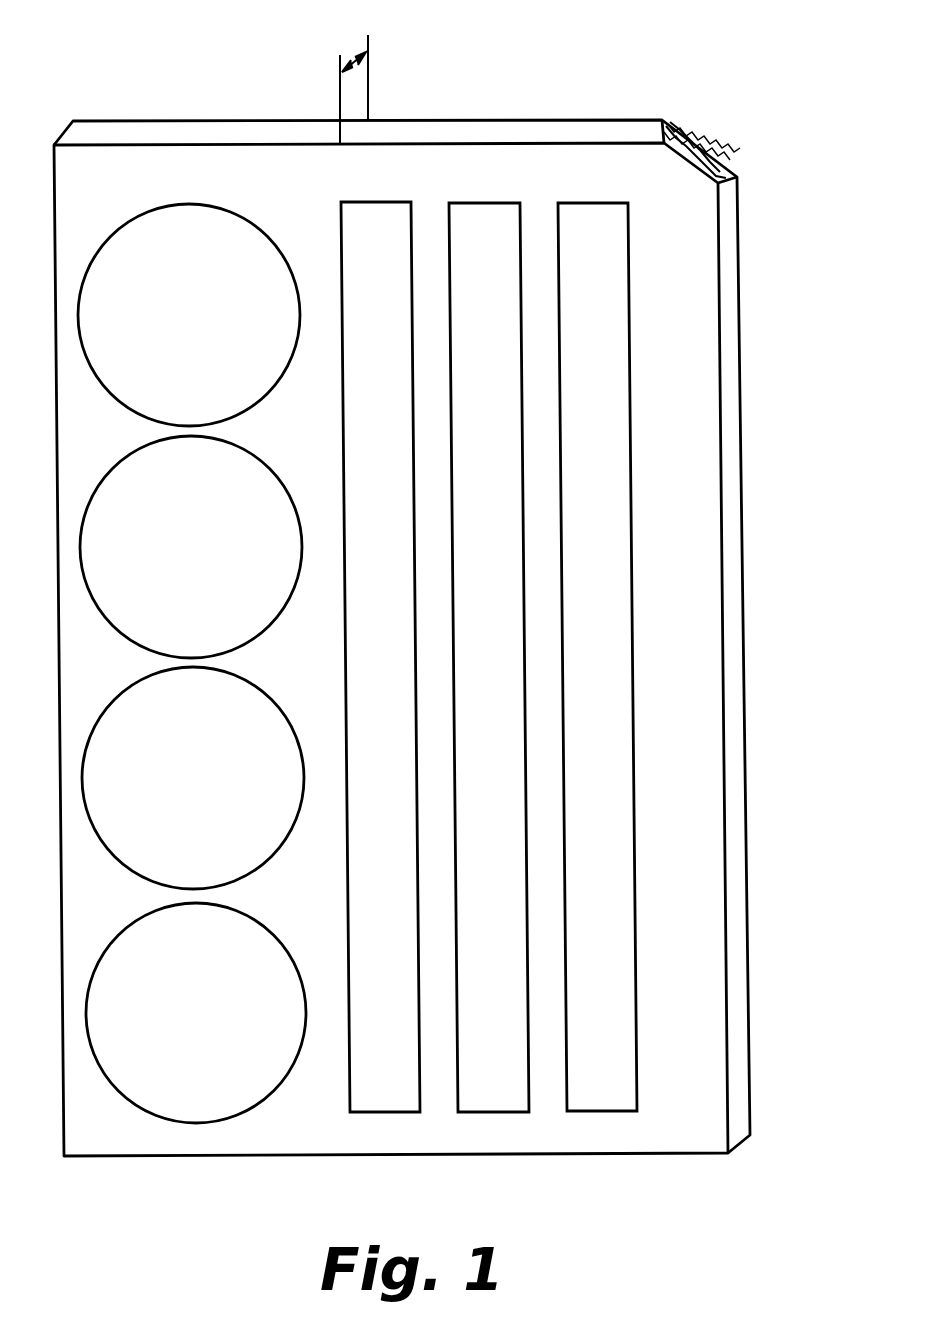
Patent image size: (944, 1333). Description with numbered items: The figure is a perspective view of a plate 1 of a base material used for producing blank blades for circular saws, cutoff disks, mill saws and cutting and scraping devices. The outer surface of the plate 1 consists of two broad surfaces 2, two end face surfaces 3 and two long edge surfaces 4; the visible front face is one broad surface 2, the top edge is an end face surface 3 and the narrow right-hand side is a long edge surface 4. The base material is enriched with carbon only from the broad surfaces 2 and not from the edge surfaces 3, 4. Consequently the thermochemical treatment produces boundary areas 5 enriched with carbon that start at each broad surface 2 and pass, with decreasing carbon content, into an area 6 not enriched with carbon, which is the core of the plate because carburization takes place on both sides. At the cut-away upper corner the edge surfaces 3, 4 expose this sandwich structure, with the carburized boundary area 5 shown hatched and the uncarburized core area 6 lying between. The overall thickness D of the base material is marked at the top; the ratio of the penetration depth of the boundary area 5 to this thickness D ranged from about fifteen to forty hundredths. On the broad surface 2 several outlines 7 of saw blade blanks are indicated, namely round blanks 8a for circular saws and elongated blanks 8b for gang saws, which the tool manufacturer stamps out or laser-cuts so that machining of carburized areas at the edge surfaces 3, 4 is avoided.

The plate 1 is at (233, 65).
The broad surface 2 is at (113, 209).
The end face surface 3 is at (557, 128).
The long edge surface 4 is at (742, 1110).
The boundary area enriched with carbon 5 is at (690, 142).
The area not enriched with carbon 6 is at (712, 160).
The saw blade blank outlines 7 is at (213, 1122).
The saw blade blank for circular saws 8a is at (214, 1022).
The saw blade blank for gang saws 8b is at (624, 1070).
The thickness of the base material D is at (346, 68).